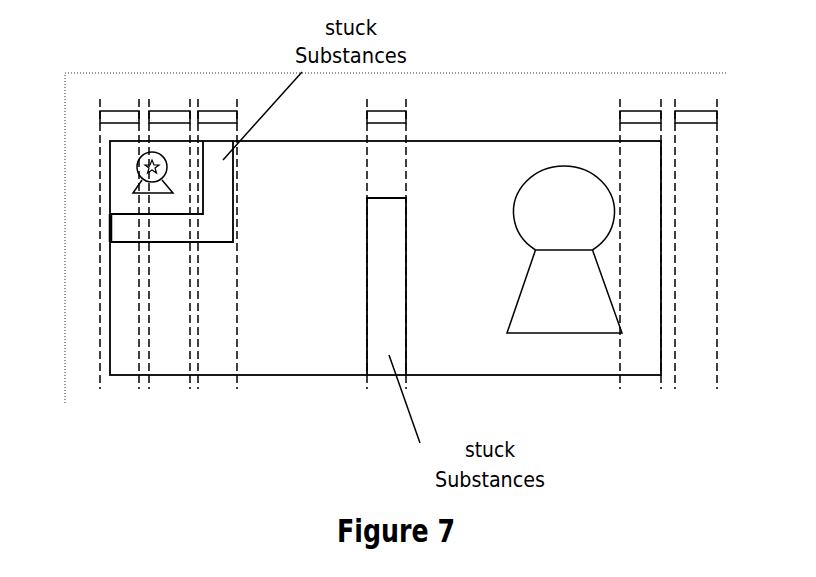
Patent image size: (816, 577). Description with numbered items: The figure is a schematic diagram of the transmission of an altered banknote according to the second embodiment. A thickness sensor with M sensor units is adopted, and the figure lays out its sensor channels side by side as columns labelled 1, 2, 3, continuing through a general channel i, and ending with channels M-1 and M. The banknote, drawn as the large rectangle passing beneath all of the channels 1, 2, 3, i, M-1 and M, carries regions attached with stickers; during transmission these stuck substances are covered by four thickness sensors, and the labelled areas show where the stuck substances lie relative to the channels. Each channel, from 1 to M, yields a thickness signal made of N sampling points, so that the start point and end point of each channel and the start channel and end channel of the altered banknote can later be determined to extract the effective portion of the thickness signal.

The first column / lane 1 is at (119, 240).
The second column / lane 2 is at (161, 240).
The third column / lane 3 is at (217, 240).
The i-th column / lane i is at (386, 240).
The (M-1)th column / lane M-1 is at (640, 240).
The number of sensor units M is at (696, 240).